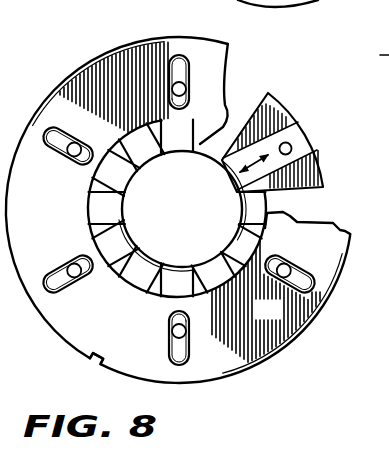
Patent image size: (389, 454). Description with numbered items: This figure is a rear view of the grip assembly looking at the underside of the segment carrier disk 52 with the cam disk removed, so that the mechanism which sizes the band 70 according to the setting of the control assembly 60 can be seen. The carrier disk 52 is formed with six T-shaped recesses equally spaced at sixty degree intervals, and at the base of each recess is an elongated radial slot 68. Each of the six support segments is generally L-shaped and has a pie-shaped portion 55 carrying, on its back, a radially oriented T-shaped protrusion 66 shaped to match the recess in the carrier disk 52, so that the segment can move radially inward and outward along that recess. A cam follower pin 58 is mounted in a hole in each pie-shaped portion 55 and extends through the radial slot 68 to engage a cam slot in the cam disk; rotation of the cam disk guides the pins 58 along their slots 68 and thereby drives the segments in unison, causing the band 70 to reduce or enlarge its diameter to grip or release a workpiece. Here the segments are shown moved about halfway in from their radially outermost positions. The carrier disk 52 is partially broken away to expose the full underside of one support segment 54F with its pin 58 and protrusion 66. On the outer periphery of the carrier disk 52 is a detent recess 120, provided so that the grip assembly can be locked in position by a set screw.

The segment carrier disk 52 is at (150, 39).
The support segment 54F is at (280, 99).
The pie-shaped portion 55 is at (314, 181).
The cam follower pin 58 is at (291, 146).
The control assembly 60 is at (299, 27).
The T-shaped protrusion 66 is at (293, 133).
The elongated radial slot 68 is at (171, 348).
The band 70 is at (238, 218).
The detent recess 120 is at (93, 360).